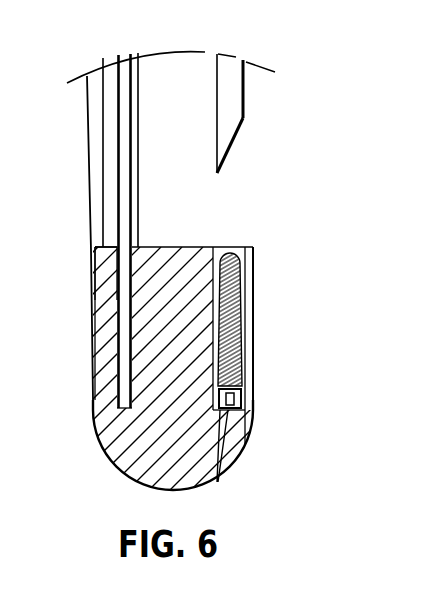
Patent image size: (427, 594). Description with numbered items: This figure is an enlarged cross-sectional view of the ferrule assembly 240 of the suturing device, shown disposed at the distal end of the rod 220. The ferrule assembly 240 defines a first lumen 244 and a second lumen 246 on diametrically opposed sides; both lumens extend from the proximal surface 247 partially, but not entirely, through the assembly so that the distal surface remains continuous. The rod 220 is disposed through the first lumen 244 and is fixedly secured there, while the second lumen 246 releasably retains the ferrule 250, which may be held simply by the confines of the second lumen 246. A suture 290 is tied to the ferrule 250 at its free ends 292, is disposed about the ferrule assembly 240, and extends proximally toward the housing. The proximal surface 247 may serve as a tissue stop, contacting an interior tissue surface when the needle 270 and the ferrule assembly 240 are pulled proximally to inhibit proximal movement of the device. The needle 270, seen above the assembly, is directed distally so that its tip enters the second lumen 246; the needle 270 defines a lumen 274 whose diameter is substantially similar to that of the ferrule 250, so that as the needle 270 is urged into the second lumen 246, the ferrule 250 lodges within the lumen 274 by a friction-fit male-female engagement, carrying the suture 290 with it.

The rod 220 is at (103, 125).
The ferrule assembly 240 is at (107, 459).
The first lumen 244 is at (102, 259).
The second lumen 246 is at (233, 246).
The proximal surface 247 is at (169, 247).
The ferrule 250 is at (230, 320).
The needle 270 is at (247, 86).
The lumen 274 is at (252, 142).
The suture 290 is at (230, 458).
The free ends 292 is at (240, 413).